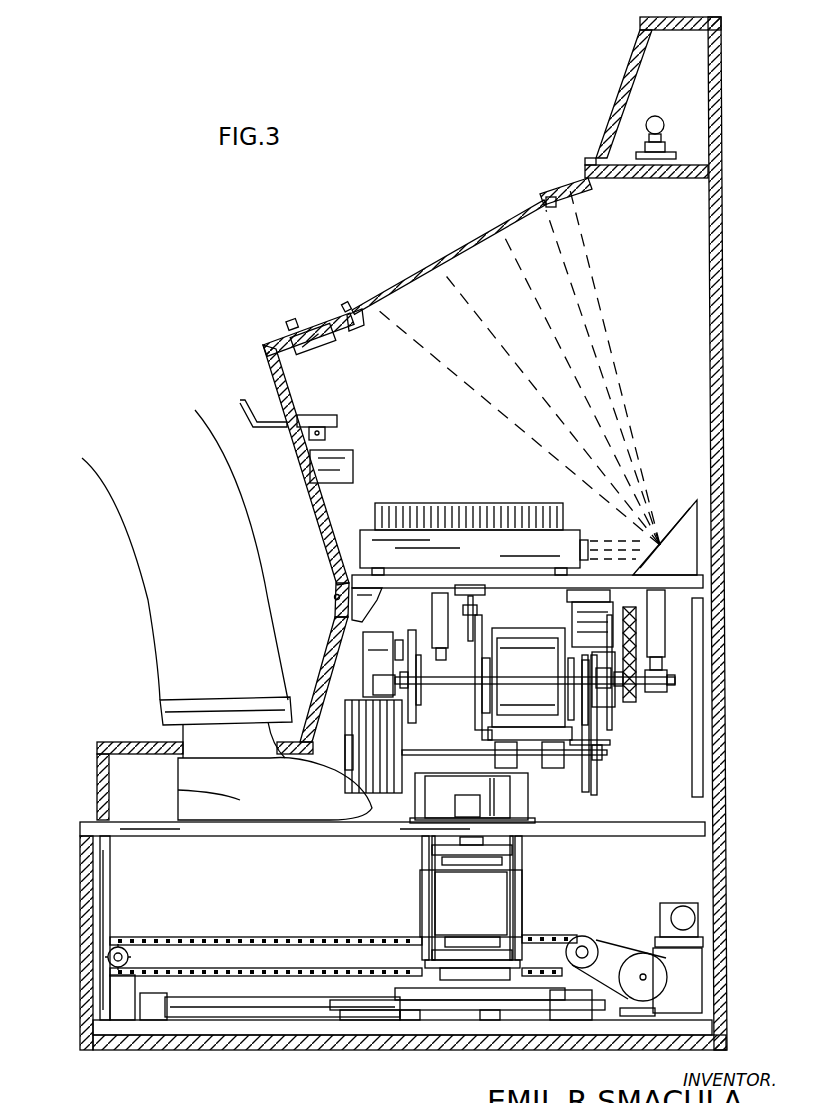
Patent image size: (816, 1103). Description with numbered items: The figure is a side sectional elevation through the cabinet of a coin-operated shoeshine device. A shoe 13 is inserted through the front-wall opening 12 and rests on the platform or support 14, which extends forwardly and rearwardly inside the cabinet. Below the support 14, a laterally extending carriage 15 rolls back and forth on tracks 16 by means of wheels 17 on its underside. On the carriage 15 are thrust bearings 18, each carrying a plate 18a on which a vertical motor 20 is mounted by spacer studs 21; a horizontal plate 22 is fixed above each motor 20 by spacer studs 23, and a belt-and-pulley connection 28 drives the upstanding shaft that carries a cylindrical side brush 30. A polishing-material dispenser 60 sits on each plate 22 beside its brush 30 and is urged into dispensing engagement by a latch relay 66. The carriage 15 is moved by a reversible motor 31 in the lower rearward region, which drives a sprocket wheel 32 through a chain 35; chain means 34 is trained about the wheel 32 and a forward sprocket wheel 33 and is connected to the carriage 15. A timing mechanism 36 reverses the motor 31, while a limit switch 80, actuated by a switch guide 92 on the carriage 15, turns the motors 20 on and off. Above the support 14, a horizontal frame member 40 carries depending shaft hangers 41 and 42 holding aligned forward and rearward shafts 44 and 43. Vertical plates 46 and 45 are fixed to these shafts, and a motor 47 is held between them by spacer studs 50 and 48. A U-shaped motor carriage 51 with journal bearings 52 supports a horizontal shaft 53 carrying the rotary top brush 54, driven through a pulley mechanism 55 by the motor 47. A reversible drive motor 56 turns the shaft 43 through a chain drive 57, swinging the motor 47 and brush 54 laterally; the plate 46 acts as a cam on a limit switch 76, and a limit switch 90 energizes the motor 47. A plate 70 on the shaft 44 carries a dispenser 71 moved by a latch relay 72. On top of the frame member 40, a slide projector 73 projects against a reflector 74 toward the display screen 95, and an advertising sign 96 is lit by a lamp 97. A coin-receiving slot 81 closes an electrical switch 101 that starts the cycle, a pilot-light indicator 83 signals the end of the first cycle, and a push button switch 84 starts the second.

The front-wall opening 12 is at (148, 745).
The shoe 13 is at (305, 800).
The platform or support 14 is at (150, 822).
The carriage 15 is at (450, 1035).
The tracks 16 is at (235, 1012).
The wheels 17 is at (512, 1035).
The thrust bearings 18 is at (425, 978).
The disc or plate 18a is at (415, 970).
The motor or drive means 20 is at (492, 898).
The spacer studs 21 is at (415, 935).
The disc or plate 22 is at (422, 850).
The spacer studs 23 is at (422, 865).
The belt-and-pulley connection 28 is at (512, 850).
The brushes 30 is at (395, 838).
The reversible motor 31 is at (645, 965).
The sprocket wheel 32 is at (600, 917).
The sprocket wheel 33 is at (132, 958).
The chain means 34 is at (262, 936).
The chain 35 is at (612, 945).
The timing mechanism 36 is at (675, 912).
The frame member 40 is at (498, 590).
The shaft hanger 41 is at (436, 648).
The shaft hanger 42 is at (660, 655).
The rearward shaft 43 is at (685, 700).
The forward shaft 44 is at (420, 695).
The plate 45 is at (612, 715).
The plate 46 is at (466, 640).
The motor 47 is at (515, 665).
The spacer studs 48 is at (590, 770).
The spacer studs 50 is at (487, 650).
The motor carriage 51 is at (520, 738).
The journal bearings 52 is at (520, 770).
The shaft 53 is at (416, 762).
The rotary brush 54 is at (350, 697).
The transmission or pulley mechanism 55 is at (605, 748).
The drive motor 56 is at (602, 640).
The chain drive 57 is at (632, 700).
The polishing-material dispenser 60 is at (440, 795).
The latch relay 66 is at (462, 800).
The plate 70 is at (412, 645).
The dispenser 71 is at (385, 645).
The latch relay 72 is at (375, 680).
The slide projector 73 is at (366, 530).
The reflector 74 is at (672, 540).
The limit switch 76 is at (462, 593).
The limit switch 80 is at (560, 1032).
The coin-receiving slot 81 is at (265, 420).
The pilot-light indicator 83 is at (312, 318).
The push button switch 84 is at (290, 318).
The limit switch 90 is at (613, 597).
The switch guide 92 is at (385, 1035).
The display screen 95 is at (488, 232).
The advertising-copy space or sign 96 is at (624, 70).
The lamp 97 is at (660, 115).
The electrical switch 101 is at (326, 433).